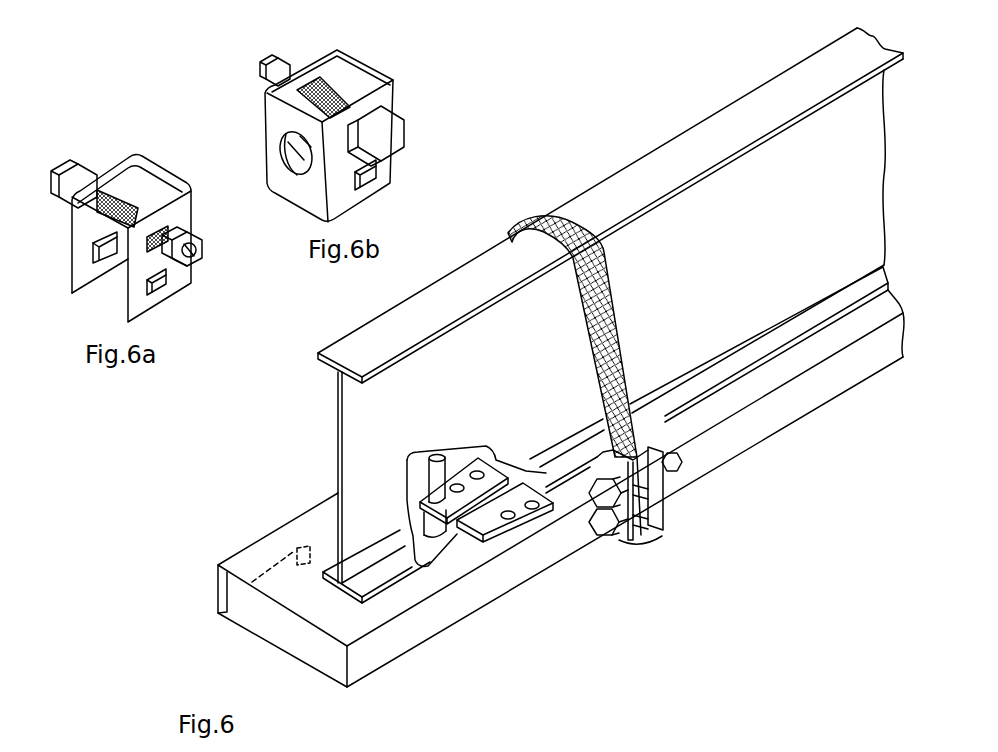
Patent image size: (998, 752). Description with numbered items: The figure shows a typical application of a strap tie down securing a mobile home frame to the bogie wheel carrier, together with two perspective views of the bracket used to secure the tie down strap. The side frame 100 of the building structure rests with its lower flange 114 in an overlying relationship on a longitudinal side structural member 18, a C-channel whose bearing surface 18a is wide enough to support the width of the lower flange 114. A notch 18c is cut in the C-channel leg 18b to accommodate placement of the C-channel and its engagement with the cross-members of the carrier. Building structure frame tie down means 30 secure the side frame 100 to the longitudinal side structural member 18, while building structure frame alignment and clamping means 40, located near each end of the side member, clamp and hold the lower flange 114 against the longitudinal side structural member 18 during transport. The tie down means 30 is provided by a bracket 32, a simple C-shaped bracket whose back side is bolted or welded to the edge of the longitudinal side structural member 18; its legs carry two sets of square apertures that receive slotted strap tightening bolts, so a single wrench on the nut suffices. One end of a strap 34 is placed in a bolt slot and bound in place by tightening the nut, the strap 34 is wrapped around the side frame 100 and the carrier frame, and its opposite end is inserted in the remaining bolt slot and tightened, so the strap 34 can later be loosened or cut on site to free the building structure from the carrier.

In FIG. 6, the side frame 100 is at (788, 247).
In FIG. 6, the lower flange 114 is at (886, 268).
In FIG. 6, the longitudinal side structural member 18 is at (503, 488).
In FIG. 6, the bearing surface 18a is at (312, 625).
In FIG. 6, the C-channel leg 18b is at (219, 592).
In FIG. 6, the notch 18c is at (280, 560).
In FIG. 6, the building structure frame tie down means 30 is at (728, 477).
In FIG. 6, the bracket 32 is at (652, 503).
In FIG. 6A, the bracket 32 is at (173, 293).
In FIG. 6B, the bracket 32 is at (375, 190).
In FIG. 6, the strap 34 is at (617, 347).
In FIG. 6, the building structure frame alignment and clamping means 40 is at (476, 560).